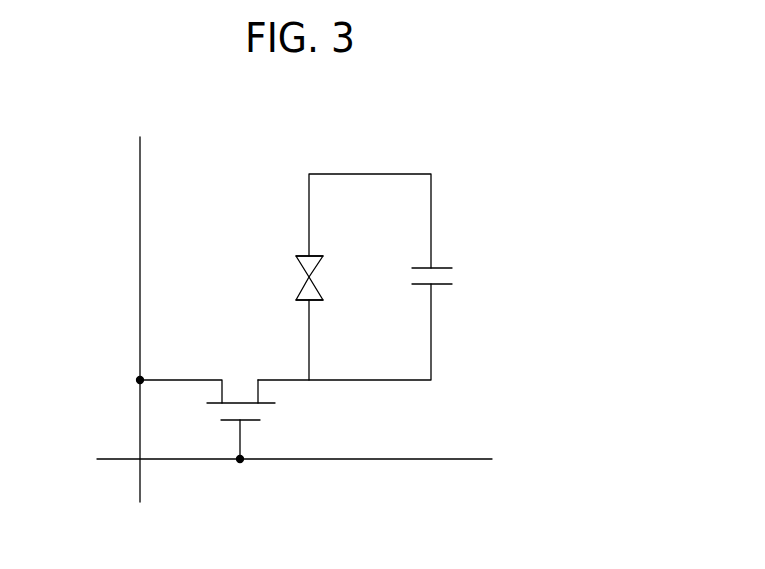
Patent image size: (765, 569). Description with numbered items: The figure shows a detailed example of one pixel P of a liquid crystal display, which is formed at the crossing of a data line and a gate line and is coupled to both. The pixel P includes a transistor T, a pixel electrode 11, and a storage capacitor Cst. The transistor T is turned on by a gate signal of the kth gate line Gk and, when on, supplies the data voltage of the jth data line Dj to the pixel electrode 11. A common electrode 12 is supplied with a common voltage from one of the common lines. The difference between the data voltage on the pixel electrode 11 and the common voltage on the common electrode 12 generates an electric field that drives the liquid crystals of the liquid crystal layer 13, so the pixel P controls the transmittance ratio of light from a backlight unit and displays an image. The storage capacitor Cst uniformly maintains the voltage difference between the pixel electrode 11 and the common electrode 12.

The pixel electrode 11 is at (300, 301).
The common electrode 12 is at (307, 255).
The liquid crystal layer 13 is at (312, 277).
The pixel P is at (440, 156).
The transistor T is at (217, 419).
The storage capacitor Cst is at (448, 280).
The jth data line Dj is at (140, 178).
The kth gate line Gk is at (370, 461).